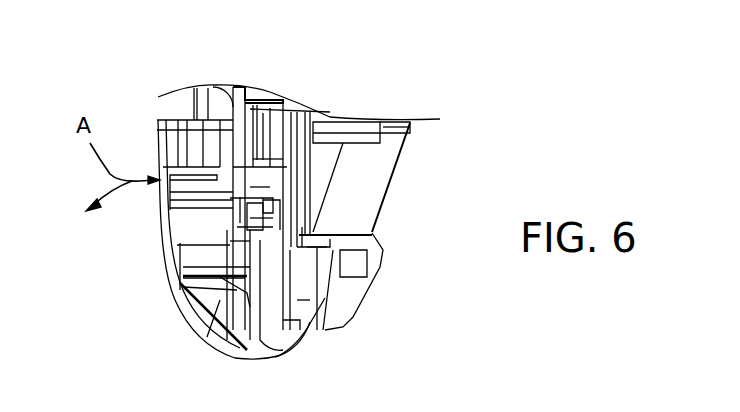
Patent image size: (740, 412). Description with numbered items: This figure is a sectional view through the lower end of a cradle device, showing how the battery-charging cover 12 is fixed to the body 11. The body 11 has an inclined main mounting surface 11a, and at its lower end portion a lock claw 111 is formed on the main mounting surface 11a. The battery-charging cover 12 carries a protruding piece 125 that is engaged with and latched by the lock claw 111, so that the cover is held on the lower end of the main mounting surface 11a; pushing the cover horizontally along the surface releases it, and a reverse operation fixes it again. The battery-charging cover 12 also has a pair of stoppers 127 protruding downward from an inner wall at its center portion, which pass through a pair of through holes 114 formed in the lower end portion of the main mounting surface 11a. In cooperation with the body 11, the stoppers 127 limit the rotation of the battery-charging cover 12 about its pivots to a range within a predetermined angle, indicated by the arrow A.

The body 11 is at (260, 197).
The main mounting surface 11a is at (214, 86).
The battery-charging cover 12 is at (168, 299).
The lock claw 111 is at (245, 208).
The through holes 114 is at (262, 191).
The protruding piece 125 is at (213, 302).
The stoppers 127 is at (262, 196).